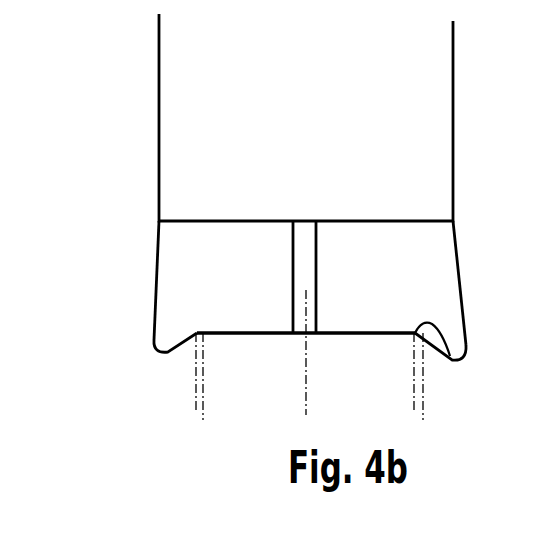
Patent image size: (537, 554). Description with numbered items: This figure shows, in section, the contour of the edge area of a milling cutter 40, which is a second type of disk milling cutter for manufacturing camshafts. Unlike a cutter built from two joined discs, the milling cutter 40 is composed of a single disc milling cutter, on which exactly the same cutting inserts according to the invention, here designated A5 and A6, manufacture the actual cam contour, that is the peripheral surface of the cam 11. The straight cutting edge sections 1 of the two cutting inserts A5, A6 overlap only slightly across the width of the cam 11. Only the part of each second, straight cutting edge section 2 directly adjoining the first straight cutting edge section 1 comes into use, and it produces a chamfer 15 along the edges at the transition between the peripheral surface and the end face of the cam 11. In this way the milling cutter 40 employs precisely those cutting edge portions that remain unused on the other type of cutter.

The milling cutter 40 is at (116, 100).
The cutting insert A5 is at (172, 263).
The cutting insert A6 is at (448, 278).
The second, straight cutting edge section 2 is at (180, 352).
The chamfer 15 is at (444, 352).
The cam 11 is at (223, 394).
The straight cutting edge section 1 is at (262, 333).